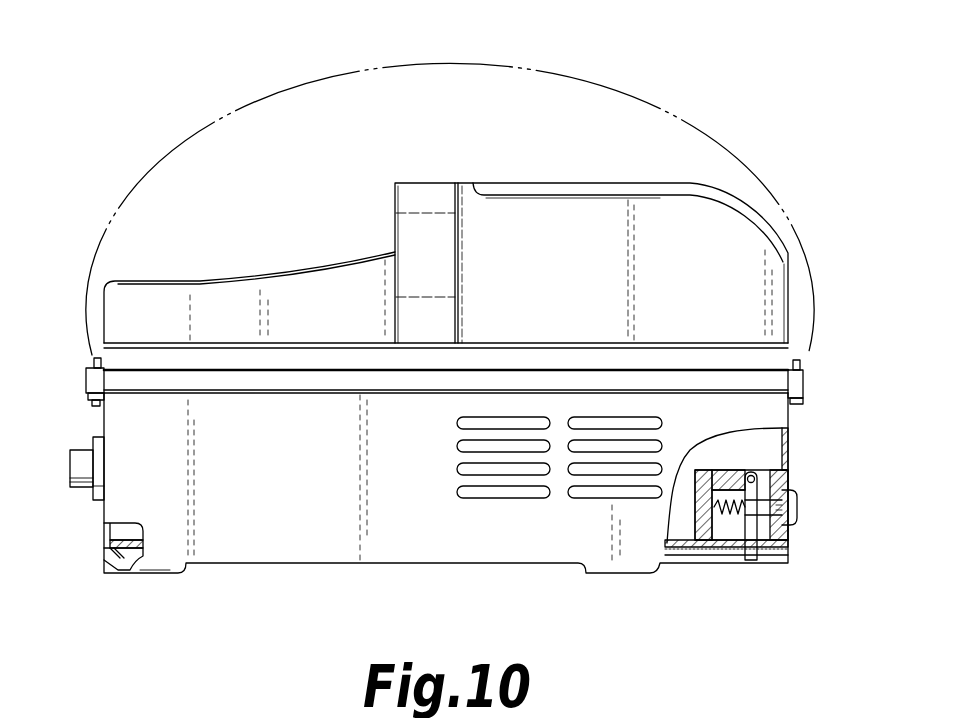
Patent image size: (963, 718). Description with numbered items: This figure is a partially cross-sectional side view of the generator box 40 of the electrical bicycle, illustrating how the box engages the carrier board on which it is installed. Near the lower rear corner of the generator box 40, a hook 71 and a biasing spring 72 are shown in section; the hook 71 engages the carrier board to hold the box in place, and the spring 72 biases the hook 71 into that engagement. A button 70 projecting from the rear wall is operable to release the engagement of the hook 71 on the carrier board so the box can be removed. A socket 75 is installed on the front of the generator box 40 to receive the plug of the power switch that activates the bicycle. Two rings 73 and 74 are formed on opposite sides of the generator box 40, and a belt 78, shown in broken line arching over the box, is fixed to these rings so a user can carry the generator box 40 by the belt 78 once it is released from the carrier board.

The belt 78 is at (572, 58).
The generator box 40 is at (736, 191).
The ring 74 is at (95, 358).
The ring 73 is at (803, 380).
The socket 75 is at (80, 472).
The button 70 is at (800, 505).
The biasing spring 72 is at (736, 507).
The hook 71 is at (757, 553).